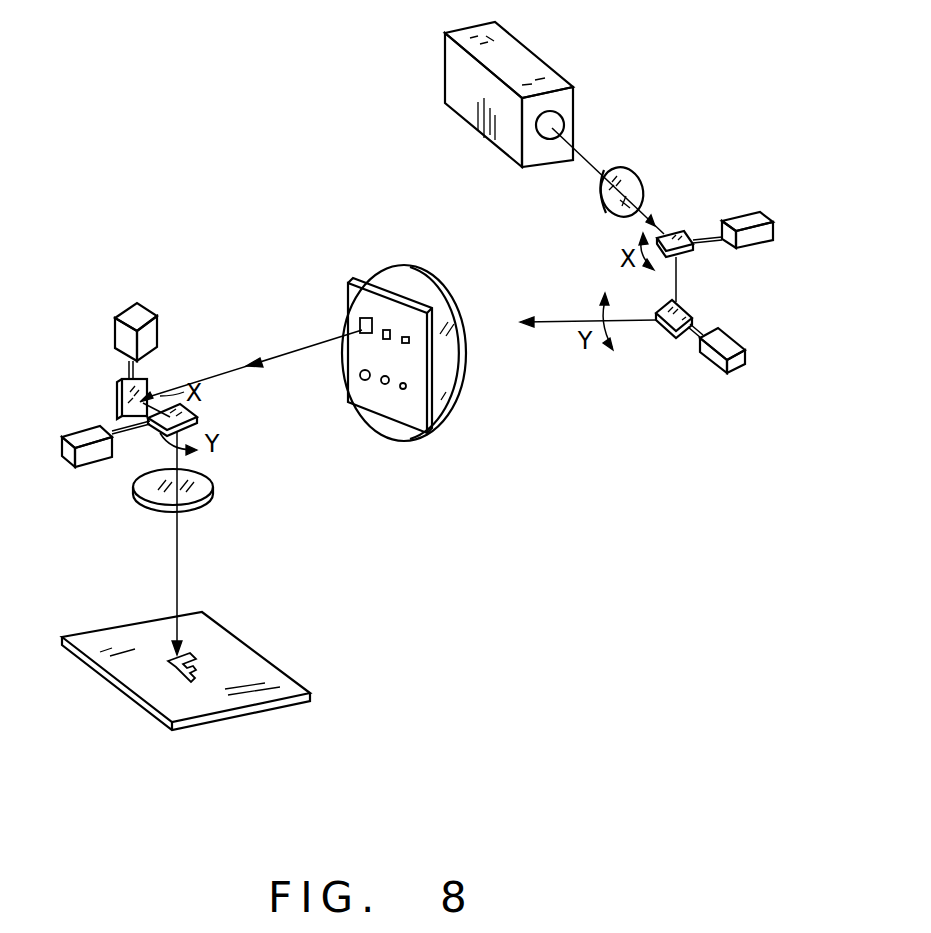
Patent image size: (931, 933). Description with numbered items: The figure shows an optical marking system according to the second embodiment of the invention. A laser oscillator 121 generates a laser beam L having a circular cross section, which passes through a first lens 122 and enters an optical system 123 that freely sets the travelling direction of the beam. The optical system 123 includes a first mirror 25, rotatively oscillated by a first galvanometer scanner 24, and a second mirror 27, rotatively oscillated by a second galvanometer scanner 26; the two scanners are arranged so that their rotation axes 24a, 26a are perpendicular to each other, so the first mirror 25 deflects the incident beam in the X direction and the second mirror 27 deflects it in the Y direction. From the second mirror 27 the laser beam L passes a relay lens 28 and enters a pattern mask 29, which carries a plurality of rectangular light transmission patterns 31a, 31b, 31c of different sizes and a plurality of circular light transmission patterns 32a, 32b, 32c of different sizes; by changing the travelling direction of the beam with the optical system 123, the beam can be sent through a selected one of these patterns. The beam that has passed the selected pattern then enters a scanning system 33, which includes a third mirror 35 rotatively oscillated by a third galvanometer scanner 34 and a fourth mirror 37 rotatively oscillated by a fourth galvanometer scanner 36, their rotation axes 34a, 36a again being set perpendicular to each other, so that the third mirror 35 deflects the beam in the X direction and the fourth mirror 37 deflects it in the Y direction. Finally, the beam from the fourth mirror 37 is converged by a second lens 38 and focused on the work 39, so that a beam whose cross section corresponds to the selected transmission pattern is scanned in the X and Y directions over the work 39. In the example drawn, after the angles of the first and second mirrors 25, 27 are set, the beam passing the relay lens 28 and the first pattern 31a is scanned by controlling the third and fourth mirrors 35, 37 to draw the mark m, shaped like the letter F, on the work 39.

The laser oscillator 121 is at (533, 64).
The first lens 122 is at (644, 184).
The optical system 123 is at (725, 302).
The first galvanometer scanner 24 is at (757, 242).
The rotation axis 24a is at (704, 233).
The first mirror 25 is at (687, 252).
The second galvanometer scanner 26 is at (738, 358).
The rotation axis 26a is at (692, 340).
The second mirror 27 is at (663, 335).
The relay lens 28 is at (464, 374).
The pattern mask 29 is at (430, 430).
The rectangular light transmission pattern 31a is at (360, 322).
The rectangular light transmission pattern 31b is at (387, 330).
The rectangular light transmission pattern 31c is at (408, 337).
The circular light transmission pattern 32a is at (361, 378).
The circular light transmission pattern 32b is at (385, 385).
The circular light transmission pattern 32c is at (402, 392).
The scanning system 33 is at (206, 360).
The third galvanometer scanner 34 is at (143, 314).
The rotation axis 34a is at (127, 370).
The third mirror 35 is at (118, 397).
The fourth galvanometer scanner 36 is at (66, 443).
The rotation axis 36a is at (120, 436).
The fourth mirror 37 is at (197, 414).
The second lens 38 is at (212, 484).
The work 39 is at (265, 668).
The laser beam L is at (586, 170).
The mark m is at (165, 675).